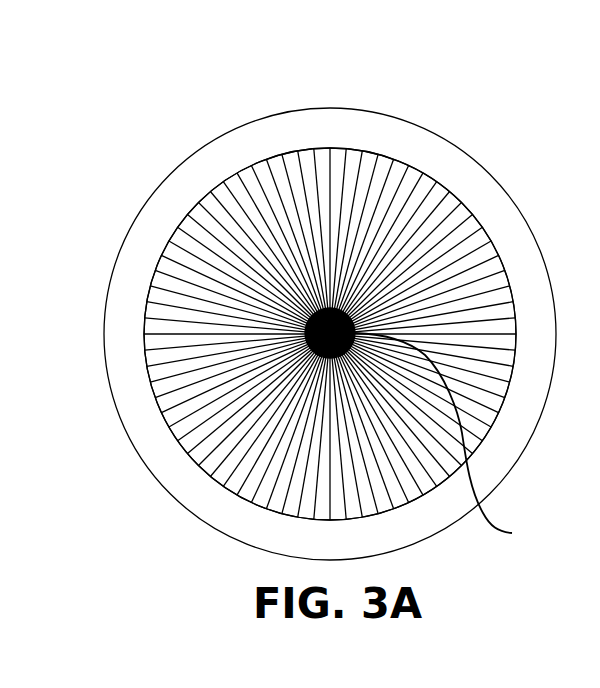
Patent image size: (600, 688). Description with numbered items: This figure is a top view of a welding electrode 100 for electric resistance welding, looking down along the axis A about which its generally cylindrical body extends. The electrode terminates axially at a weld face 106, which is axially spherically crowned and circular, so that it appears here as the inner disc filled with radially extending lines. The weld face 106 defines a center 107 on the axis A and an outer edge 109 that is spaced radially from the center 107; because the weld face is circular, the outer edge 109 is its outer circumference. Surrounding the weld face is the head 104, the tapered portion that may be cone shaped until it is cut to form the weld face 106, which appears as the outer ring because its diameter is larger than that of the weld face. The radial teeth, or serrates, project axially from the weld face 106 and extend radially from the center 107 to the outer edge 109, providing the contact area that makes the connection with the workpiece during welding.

The welding electrode 100 is at (128, 79).
The head 104 is at (361, 120).
The weld face 106 is at (178, 412).
The center 107 is at (512, 533).
The outer edge 109 is at (505, 407).
The axis A is at (290, 300).